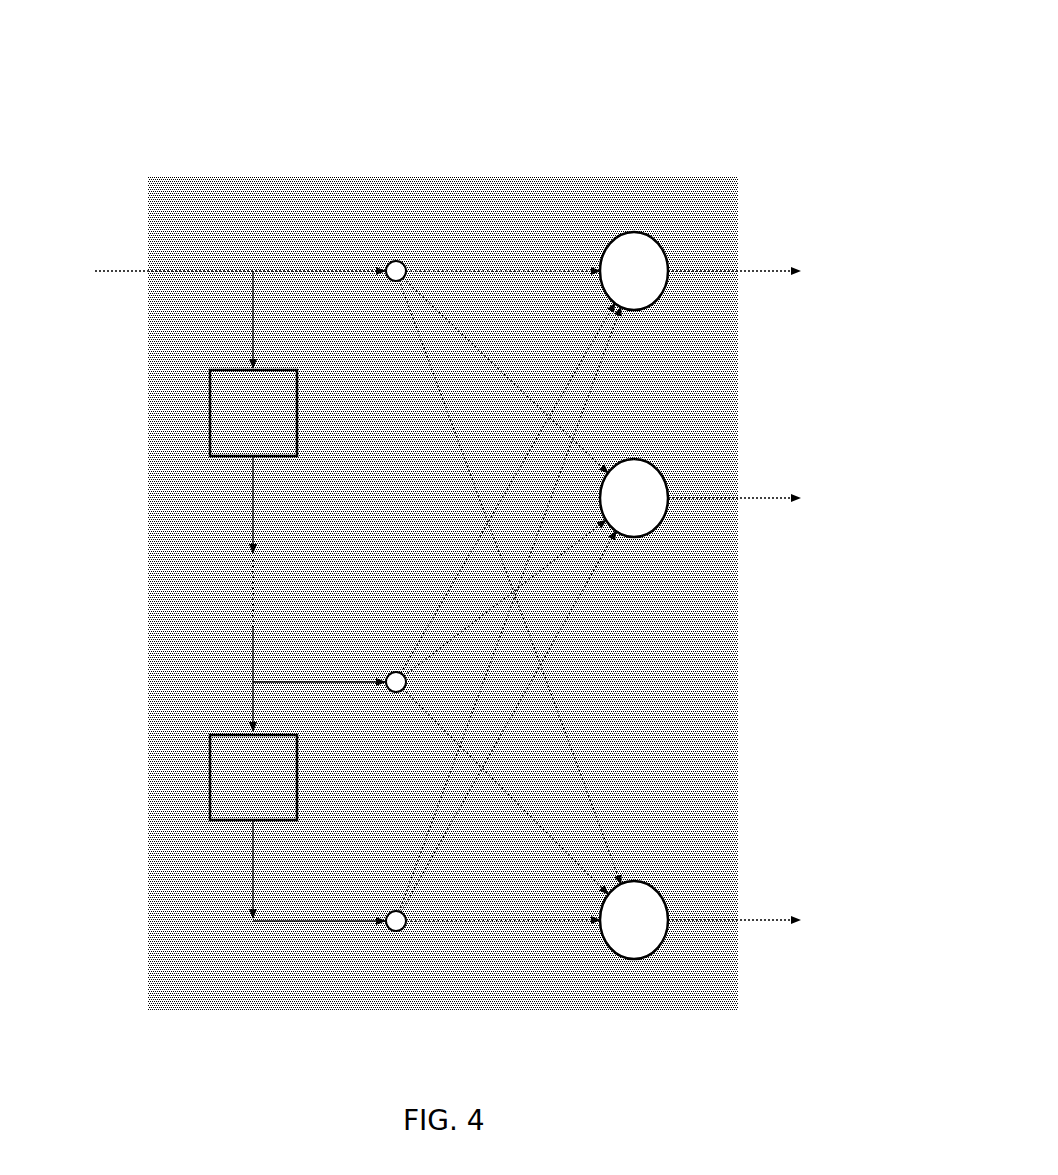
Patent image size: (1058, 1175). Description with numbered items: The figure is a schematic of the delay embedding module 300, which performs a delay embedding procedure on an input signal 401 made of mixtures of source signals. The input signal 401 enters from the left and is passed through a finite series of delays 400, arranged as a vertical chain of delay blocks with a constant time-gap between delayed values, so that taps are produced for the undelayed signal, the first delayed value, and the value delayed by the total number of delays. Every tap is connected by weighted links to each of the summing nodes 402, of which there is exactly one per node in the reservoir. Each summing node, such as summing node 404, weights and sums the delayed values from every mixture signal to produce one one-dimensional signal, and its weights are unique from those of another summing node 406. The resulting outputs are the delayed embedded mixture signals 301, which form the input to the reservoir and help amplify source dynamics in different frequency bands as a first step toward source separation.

The delay embedding module 300 is at (512, 183).
The delayed embedded mixture signals 301 is at (793, 142).
The finite series of delays 400 is at (248, 192).
The input signal 401 is at (74, 178).
The summing nodes 402 is at (679, 487).
The summing node 404 is at (657, 465).
The other summing node 406 is at (650, 884).